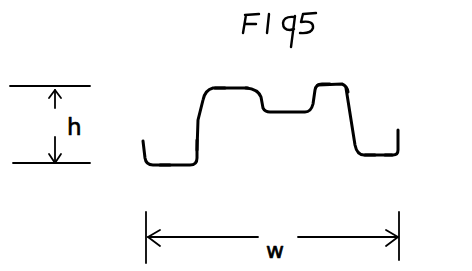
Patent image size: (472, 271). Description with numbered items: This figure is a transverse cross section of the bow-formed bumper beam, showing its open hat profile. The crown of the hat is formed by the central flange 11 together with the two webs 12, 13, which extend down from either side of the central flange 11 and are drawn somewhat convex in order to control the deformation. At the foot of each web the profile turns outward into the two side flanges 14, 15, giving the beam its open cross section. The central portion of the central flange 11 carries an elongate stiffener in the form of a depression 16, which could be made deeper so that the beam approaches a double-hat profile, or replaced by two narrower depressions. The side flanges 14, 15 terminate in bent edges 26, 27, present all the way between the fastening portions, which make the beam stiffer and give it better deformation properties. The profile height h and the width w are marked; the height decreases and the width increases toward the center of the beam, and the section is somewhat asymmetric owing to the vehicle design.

The central flange 11 is at (330, 82).
The web 12 is at (195, 132).
The web 13 is at (353, 105).
The side flange 14 is at (165, 167).
The side flange 15 is at (378, 157).
The depression 16 is at (287, 113).
The bent edge 26 is at (140, 148).
The bent edge 27 is at (403, 140).